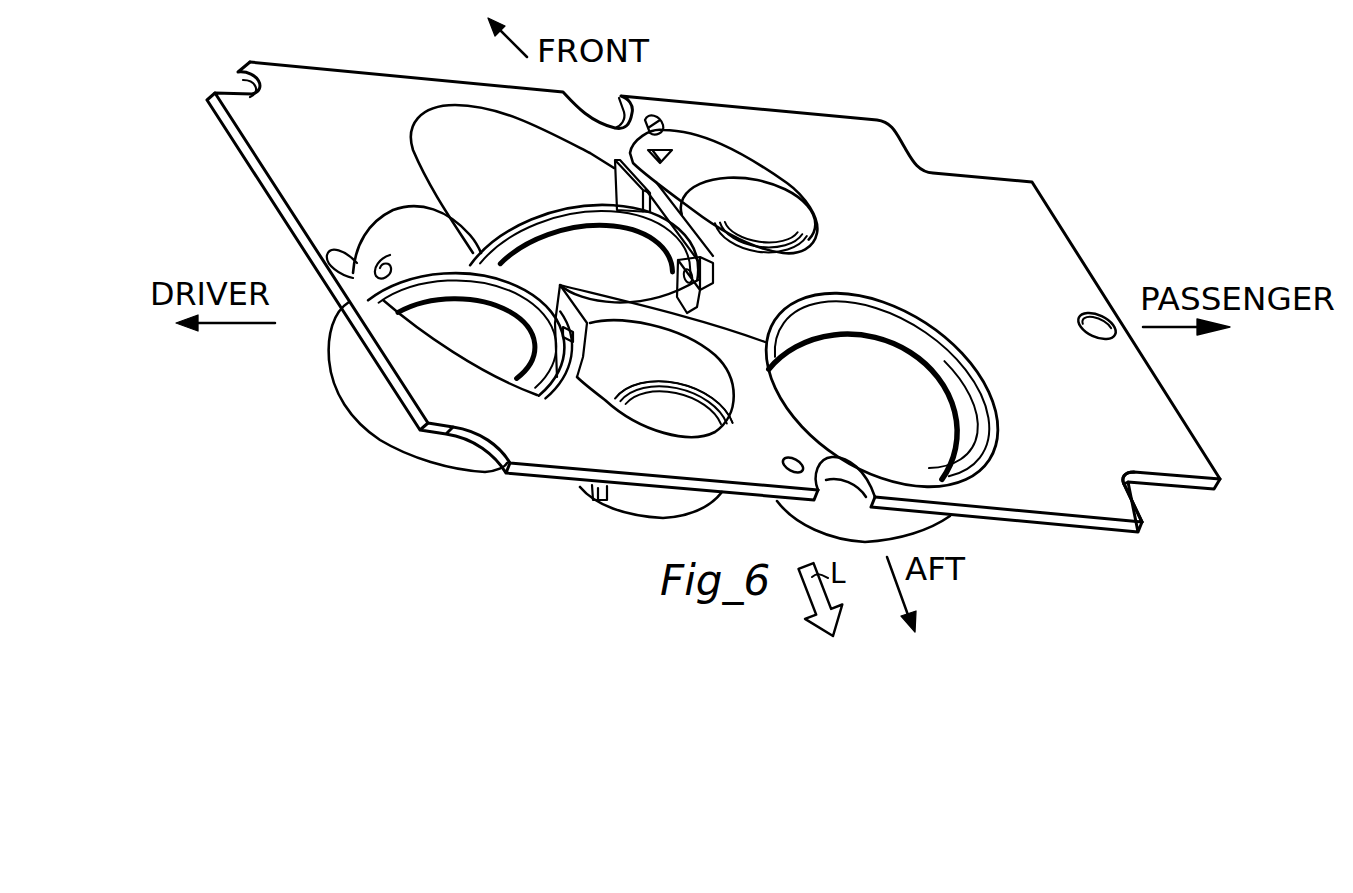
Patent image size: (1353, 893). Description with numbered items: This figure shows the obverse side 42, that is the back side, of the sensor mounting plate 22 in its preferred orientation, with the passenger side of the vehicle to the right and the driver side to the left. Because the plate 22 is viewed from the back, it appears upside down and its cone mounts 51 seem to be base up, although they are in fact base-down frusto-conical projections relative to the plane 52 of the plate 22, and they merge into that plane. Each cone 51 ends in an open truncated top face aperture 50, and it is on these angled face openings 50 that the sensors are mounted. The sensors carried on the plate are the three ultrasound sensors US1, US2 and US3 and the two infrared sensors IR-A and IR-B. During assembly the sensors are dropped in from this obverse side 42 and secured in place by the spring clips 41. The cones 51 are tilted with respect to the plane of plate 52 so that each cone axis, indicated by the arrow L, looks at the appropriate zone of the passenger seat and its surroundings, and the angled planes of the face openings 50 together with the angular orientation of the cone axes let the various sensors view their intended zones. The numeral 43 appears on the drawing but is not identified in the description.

The sensor mounting plate 22 is at (1025, 524).
The upper surface of plate 43 is at (1088, 432).
The plane of the plate 52 is at (1176, 488).
The top truncated plane 50 is at (498, 262).
The cone 51 is at (476, 174).
The spring clip 41 is at (612, 193).
The obverse side 42 is at (706, 298).
The ultrasound sensor 1 US1 is at (632, 285).
The ultrasound sensor 2 US2 is at (492, 351).
The ultrasound sensor 3 US3 is at (900, 427).
The infrared sensor A IR-A is at (808, 240).
The infrared sensor B IR-B is at (658, 410).